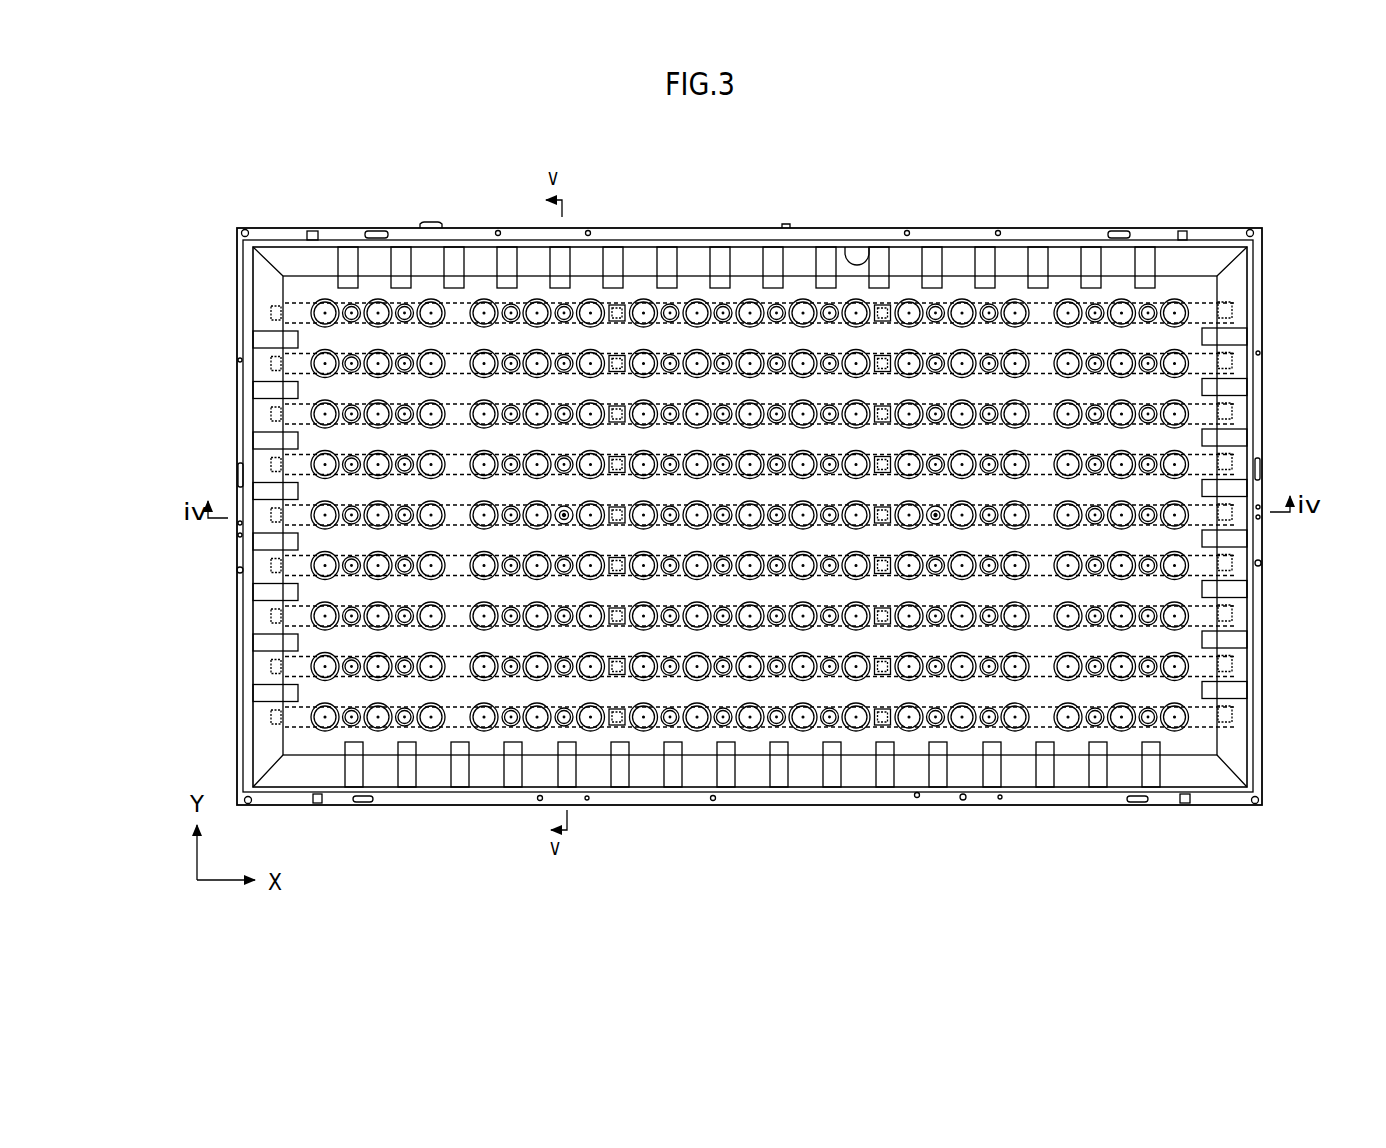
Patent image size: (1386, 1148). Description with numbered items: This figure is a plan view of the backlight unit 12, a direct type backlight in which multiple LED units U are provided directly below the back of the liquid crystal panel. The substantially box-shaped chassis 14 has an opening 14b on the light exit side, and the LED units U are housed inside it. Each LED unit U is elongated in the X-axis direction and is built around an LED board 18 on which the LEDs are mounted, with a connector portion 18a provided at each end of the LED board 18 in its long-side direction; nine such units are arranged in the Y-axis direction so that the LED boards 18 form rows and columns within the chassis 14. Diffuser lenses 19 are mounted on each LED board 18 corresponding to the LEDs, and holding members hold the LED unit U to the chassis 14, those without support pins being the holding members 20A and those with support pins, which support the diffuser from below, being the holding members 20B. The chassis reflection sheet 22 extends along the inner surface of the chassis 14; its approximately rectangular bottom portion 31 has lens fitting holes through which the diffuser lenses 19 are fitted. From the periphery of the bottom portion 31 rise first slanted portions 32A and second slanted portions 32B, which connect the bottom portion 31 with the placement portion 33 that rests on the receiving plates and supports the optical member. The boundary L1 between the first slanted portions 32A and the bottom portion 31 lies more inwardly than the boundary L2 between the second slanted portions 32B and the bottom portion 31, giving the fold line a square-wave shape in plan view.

The backlight unit 12 is at (1270, 728).
The chassis 14 is at (282, 232).
The opening 14b is at (858, 262).
The LED board 18 is at (418, 302).
The connector portion 18a is at (619, 302).
The diffuser lens 19 is at (378, 300).
The holding member without support pin 20A is at (1090, 815).
The holding member with support pin 20B is at (1033, 205).
The chassis reflection sheet 22 is at (300, 743).
The bottom portion 31 is at (338, 438).
The first slanted portion 32A is at (1150, 260).
The second slanted portion 32B is at (1075, 257).
The placement portion 33 is at (1248, 253).
The LED unit U is at (833, 348).
The boundary between first slanted portion and bottom portion L1 is at (1202, 688).
The boundary between second slanted portion and bottom portion L2 is at (1214, 455).